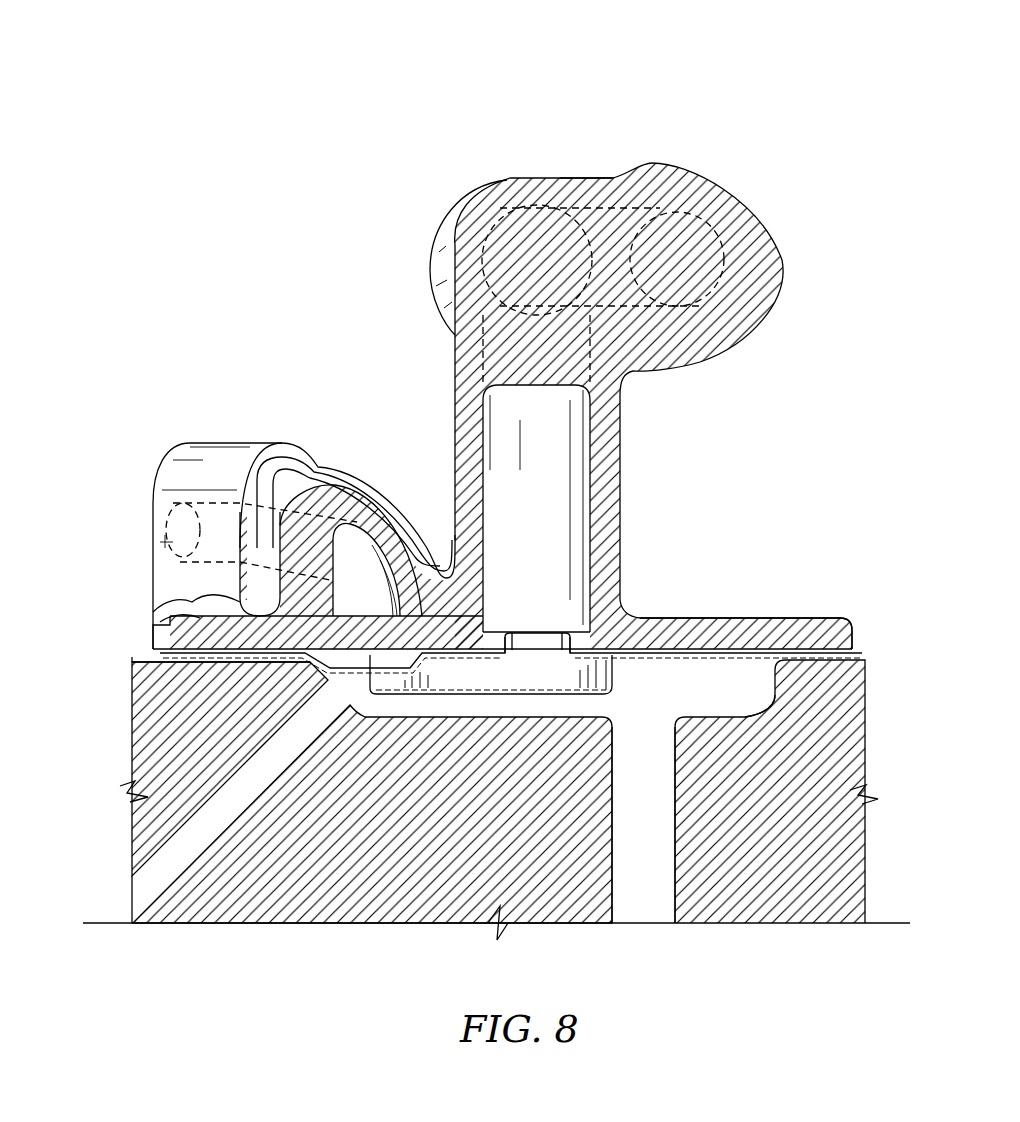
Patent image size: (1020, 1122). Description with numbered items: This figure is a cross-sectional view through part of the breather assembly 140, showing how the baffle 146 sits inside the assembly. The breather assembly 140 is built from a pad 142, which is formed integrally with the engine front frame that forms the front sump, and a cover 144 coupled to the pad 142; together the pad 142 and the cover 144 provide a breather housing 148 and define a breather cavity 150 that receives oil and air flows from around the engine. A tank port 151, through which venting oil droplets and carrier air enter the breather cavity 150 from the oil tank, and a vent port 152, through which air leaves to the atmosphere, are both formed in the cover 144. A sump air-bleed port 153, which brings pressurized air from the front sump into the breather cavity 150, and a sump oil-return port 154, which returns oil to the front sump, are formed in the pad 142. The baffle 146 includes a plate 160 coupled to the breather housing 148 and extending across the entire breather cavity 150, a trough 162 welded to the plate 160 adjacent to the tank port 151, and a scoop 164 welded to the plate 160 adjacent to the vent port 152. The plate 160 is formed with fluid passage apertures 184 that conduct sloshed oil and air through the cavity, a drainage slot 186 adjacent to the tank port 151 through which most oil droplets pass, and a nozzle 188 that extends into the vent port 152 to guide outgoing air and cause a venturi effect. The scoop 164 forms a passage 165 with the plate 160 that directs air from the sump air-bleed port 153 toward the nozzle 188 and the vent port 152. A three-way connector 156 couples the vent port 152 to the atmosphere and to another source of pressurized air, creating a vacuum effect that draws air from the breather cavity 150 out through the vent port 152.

The breather assembly 140 is at (790, 133).
The three-way connector 156 is at (588, 176).
The tank port 151 is at (354, 522).
The drainage slot 186 is at (407, 643).
The vent port 152 is at (575, 631).
The nozzle 188 is at (578, 606).
The fluid passage apertures 184 is at (715, 655).
The cover 144 is at (790, 596).
The breather housing 148 is at (868, 634).
The pad 142 is at (873, 701).
The breather cavity 150 is at (743, 698).
The sump oil-return port 154 is at (670, 740).
The scoop 164 is at (536, 699).
The passage 165 is at (471, 674).
The sump air-bleed port 153 is at (294, 757).
The trough 162 is at (333, 683).
The plate 160 is at (167, 666).
The baffle 146 is at (183, 666).